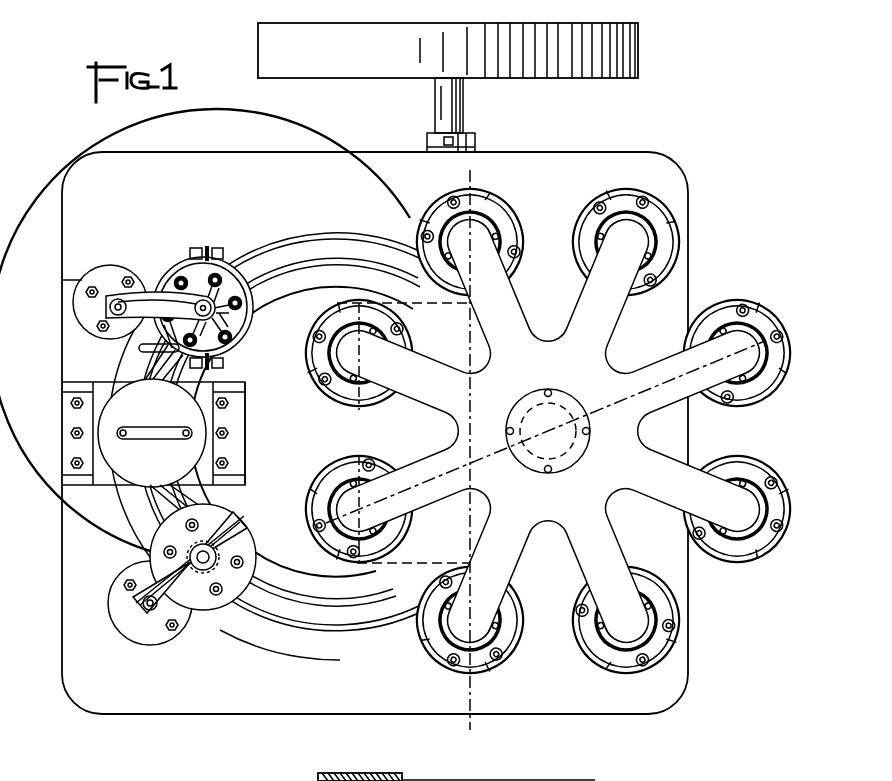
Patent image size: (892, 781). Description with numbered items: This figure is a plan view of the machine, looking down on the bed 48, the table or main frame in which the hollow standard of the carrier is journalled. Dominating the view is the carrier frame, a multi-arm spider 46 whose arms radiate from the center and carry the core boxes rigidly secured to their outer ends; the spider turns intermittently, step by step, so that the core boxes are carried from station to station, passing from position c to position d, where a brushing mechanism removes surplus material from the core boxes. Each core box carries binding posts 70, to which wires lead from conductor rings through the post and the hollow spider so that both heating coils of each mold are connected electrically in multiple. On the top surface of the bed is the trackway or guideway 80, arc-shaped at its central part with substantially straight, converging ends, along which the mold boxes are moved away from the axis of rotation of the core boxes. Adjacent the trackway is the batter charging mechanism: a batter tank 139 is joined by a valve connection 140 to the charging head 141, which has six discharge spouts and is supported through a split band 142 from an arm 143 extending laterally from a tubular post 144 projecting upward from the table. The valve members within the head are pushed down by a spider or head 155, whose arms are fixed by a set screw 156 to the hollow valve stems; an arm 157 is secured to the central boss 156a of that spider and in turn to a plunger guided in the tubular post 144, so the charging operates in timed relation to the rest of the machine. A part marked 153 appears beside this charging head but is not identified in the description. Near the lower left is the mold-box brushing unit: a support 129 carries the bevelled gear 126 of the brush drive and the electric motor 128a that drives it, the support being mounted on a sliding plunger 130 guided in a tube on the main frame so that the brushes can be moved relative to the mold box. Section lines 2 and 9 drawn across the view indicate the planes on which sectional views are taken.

The multi-arm spider 46 is at (543, 258).
The bed 48 is at (647, 162).
The trackway or guideway 80 is at (281, 240).
The guide rail 153 is at (256, 281).
The spider or head 155 is at (248, 318).
The set screw 156 is at (222, 268).
The central boss 156a is at (272, 260).
The tubular post 144 is at (76, 290).
The arm 143 is at (152, 286).
The split band 142 is at (197, 253).
The charging head 141 is at (190, 273).
The arm 157 is at (126, 292).
The valve connection 140 is at (156, 358).
The batter tank 139 is at (137, 467).
The sliding plunger 130 is at (153, 612).
The bevelled gear 126 is at (224, 600).
The electric motor 128a is at (200, 612).
The support 129 is at (205, 618).
The binding posts 70 is at (670, 282).
The section line 9- 9 is at (405, 455).
The section line 2- 2 is at (312, 528).
The position d is at (308, 348).
The position c is at (320, 470).